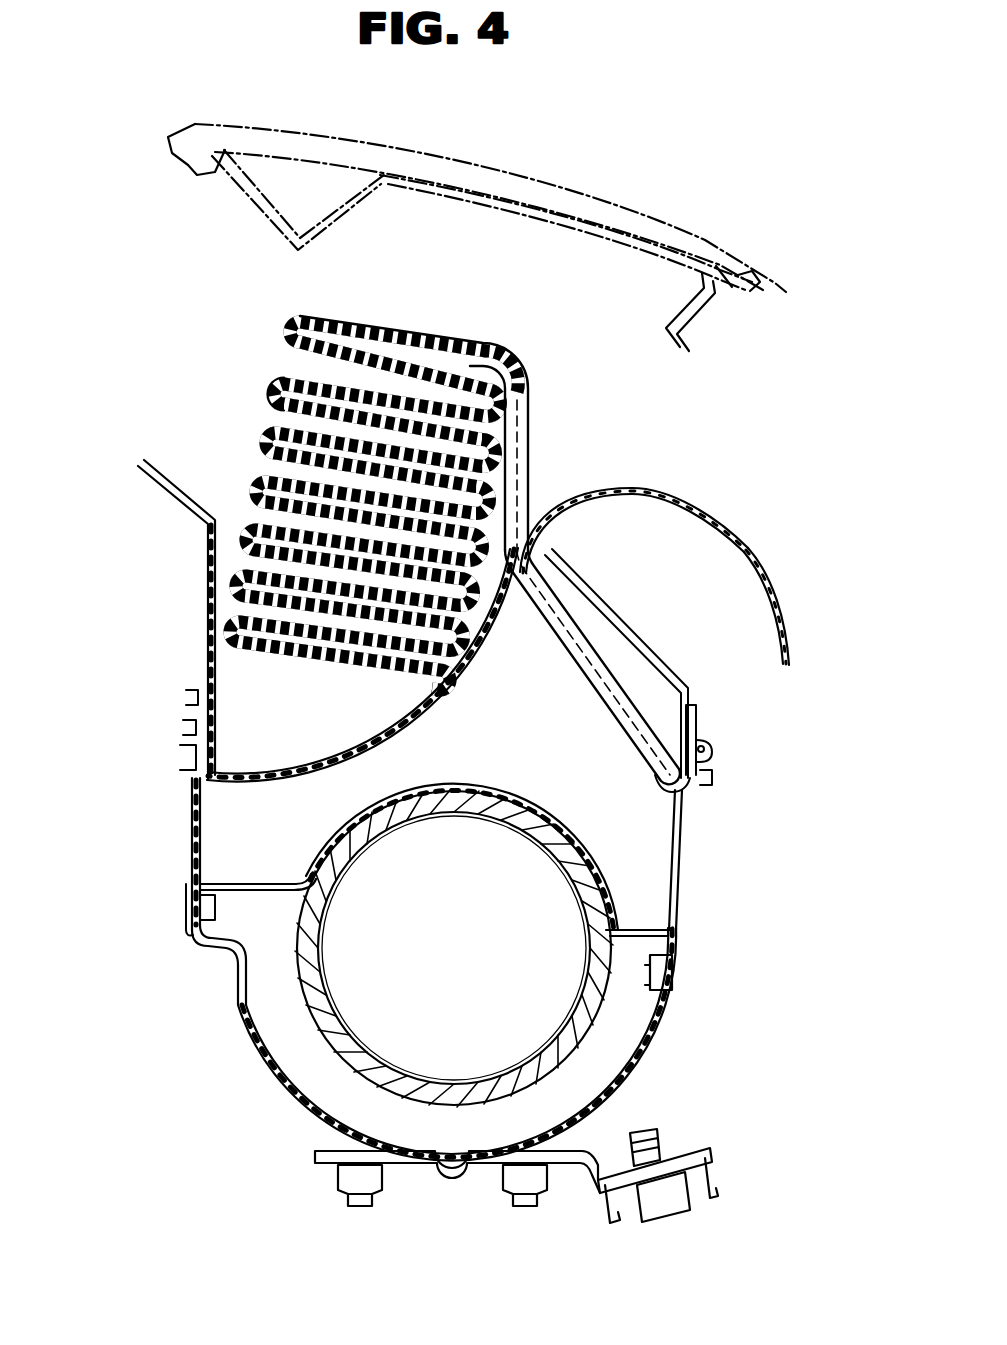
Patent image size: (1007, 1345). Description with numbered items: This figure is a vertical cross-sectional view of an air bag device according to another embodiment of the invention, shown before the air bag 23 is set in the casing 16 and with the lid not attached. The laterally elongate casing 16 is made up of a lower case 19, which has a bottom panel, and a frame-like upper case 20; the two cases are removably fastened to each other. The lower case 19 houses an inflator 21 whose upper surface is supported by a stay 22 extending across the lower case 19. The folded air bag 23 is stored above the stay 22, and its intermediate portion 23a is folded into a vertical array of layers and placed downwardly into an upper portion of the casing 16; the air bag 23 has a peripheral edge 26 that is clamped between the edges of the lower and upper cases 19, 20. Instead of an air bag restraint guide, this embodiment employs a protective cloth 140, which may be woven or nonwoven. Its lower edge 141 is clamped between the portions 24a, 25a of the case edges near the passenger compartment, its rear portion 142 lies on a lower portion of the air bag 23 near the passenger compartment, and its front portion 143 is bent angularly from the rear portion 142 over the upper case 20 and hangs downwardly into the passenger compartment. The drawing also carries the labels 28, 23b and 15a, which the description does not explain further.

The rear cross member 28 is at (543, 179).
The air bag 23 is at (424, 526).
The intermediate portion 23a is at (278, 388).
The tube section 23b is at (560, 645).
The heater assembly 15a is at (568, 460).
The protective cloth 140 is at (688, 490).
The front portion 143 is at (757, 550).
The rear portion 142 is at (610, 680).
The lower edge 141 is at (692, 735).
The peripheral edge 26 is at (710, 750).
The portion of the edge 25a is at (655, 777).
The portion of the edge 24a is at (700, 786).
The upper case 20 is at (192, 637).
The stay 22 is at (428, 790).
The inflator 21 is at (598, 1023).
The lower case 19 is at (250, 1062).
The casing 16 is at (180, 908).